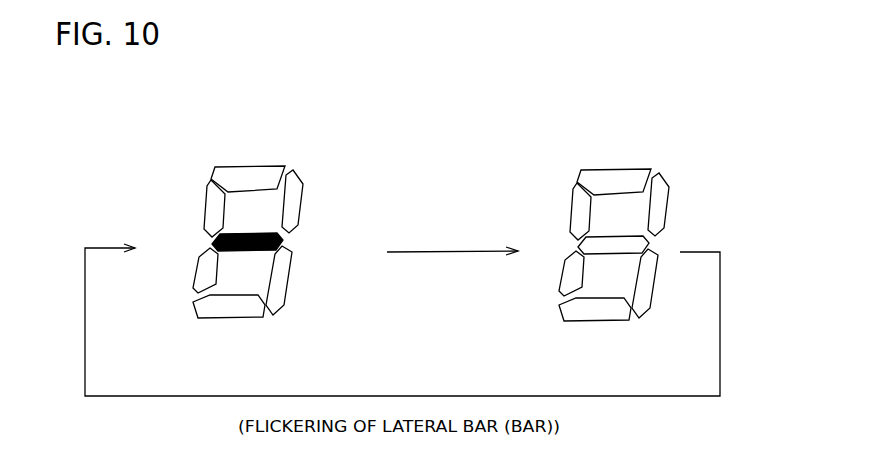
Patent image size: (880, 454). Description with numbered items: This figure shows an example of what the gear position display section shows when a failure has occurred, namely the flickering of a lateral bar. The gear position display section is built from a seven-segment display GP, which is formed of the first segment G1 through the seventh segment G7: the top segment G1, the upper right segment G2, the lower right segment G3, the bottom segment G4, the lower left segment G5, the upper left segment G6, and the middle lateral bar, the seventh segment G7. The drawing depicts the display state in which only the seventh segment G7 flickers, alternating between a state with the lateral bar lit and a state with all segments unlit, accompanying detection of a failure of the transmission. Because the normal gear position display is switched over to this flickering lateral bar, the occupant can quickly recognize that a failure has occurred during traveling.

The 7-segment display GP is at (305, 143).
The 1st segment G1 is at (248, 167).
The 2nd segment G2 is at (306, 203).
The 3rd segment G3 is at (288, 288).
The 4th segment G4 is at (240, 318).
The 5th segment G5 is at (197, 273).
The 6th segment G6 is at (206, 208).
The 7th segment G7 is at (297, 242).